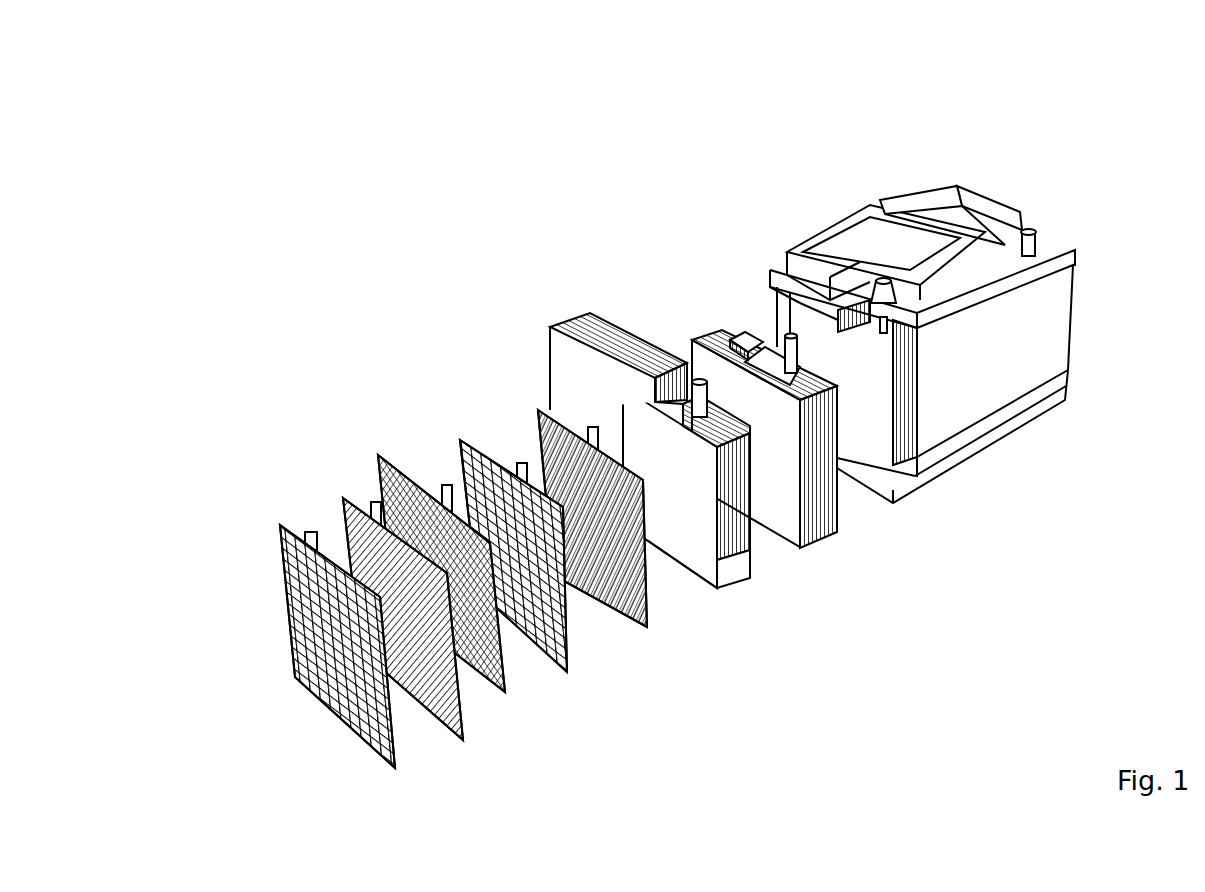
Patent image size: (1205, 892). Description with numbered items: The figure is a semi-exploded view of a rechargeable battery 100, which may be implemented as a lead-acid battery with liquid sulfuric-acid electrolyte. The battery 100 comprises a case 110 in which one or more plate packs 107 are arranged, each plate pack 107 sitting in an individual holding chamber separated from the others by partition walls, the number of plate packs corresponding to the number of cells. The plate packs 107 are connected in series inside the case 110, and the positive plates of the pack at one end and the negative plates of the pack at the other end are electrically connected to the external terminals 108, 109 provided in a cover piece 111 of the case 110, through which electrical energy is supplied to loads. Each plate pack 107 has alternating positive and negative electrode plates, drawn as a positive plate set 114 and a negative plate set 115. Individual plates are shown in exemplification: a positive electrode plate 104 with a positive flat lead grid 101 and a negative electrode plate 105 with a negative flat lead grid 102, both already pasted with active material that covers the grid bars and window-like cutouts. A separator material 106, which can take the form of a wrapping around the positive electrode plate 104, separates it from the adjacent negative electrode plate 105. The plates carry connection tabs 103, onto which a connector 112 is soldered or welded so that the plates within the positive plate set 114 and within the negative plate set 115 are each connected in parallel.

The rechargeable battery 100 is at (723, 140).
The positive flat lead grid 101 is at (290, 617).
The negative flat lead grid 102 is at (568, 635).
The connection tabs 103 is at (580, 430).
The positive electrode plate 104 is at (343, 527).
The negative electrode plate 105 is at (650, 607).
The separator material 106 is at (378, 480).
The plate pack 107 is at (696, 322).
The external terminal 108 is at (1028, 226).
The external terminal 109 is at (878, 277).
The case 110 is at (1057, 317).
The cover piece 111 is at (978, 222).
The connector 112 is at (675, 350).
The positive plate set 114 is at (563, 352).
The negative plate set 115 is at (705, 572).